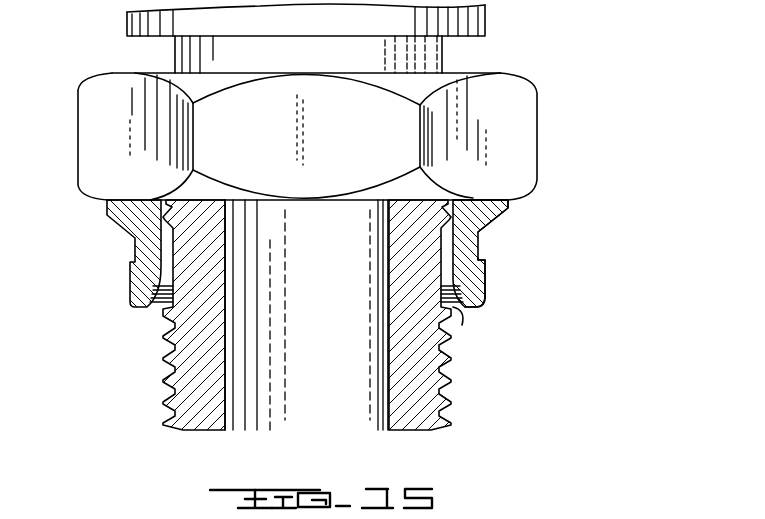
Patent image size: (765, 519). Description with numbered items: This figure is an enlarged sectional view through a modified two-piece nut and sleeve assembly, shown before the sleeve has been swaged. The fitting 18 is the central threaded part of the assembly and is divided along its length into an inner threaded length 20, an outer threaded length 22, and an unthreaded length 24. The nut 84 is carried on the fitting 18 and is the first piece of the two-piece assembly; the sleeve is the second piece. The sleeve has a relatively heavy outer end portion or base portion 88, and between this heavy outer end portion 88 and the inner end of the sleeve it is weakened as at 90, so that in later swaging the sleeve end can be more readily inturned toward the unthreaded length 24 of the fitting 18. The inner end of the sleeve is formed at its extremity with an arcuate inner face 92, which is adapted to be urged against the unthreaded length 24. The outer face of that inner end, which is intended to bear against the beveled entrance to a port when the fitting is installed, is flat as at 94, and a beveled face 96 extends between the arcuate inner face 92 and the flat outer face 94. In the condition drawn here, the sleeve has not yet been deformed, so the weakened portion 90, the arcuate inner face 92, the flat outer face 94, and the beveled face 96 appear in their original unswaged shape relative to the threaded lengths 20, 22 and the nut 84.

The fitting 18 is at (487, 23).
The nut 84 is at (522, 147).
The heavy outer end portion 88 is at (509, 207).
The outer threaded length 22 is at (483, 238).
The flat outer face 94 is at (486, 280).
The beveled face 96 is at (480, 303).
The arcuate inner face 92 is at (457, 310).
The weakened portion of sleeve 90 is at (135, 248).
The inner threaded length 20 is at (452, 390).
The unthreaded length 24 is at (443, 262).